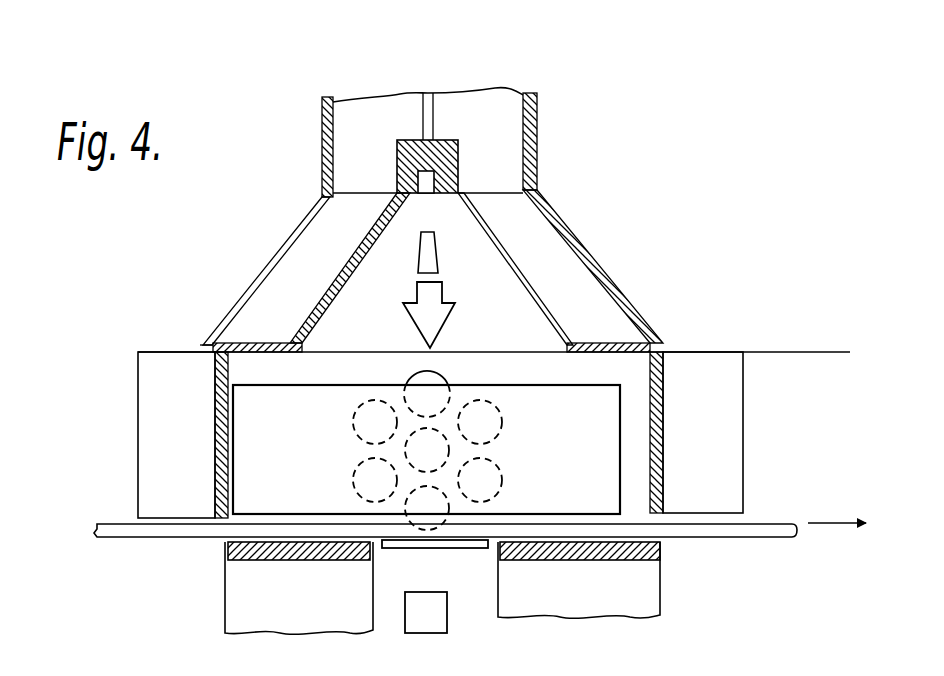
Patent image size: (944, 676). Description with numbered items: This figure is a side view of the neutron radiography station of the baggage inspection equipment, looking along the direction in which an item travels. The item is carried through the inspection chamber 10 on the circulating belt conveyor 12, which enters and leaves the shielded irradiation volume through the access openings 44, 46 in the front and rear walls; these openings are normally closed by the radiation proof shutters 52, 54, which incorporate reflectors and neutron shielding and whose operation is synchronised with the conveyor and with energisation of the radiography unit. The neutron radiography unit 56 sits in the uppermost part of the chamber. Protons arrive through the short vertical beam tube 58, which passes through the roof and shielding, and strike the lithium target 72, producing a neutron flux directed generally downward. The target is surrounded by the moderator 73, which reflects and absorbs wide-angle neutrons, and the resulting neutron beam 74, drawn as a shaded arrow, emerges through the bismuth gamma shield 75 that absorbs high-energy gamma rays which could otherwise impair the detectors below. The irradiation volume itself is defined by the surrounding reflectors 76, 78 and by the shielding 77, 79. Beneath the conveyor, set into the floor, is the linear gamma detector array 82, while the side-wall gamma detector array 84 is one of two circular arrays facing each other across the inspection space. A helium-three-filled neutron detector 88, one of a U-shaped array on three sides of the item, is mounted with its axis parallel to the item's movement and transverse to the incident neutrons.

The inspection chamber 10 is at (360, 370).
The conveyor system 12 is at (112, 524).
The access opening 44 is at (145, 435).
The access opening 46 is at (728, 432).
The radiation proof shutter 52 is at (190, 444).
The radiation proof shutter 54 is at (712, 441).
The neutron radiography unit 56 is at (421, 263).
The vertical beam tube 58 is at (433, 110).
The lithium target 72 is at (397, 194).
The moderator 73 is at (460, 163).
The neutron beam 74 is at (425, 325).
The bismuth gamma shield 75 is at (425, 258).
The reflector 76 is at (337, 277).
The shielding 77 is at (255, 317).
The reflector 78 is at (780, 345).
The shielding 79 is at (243, 615).
The gamma detector array 82 is at (447, 609).
The gamma detector array 84 is at (505, 432).
The neutron detector 88 is at (438, 548).